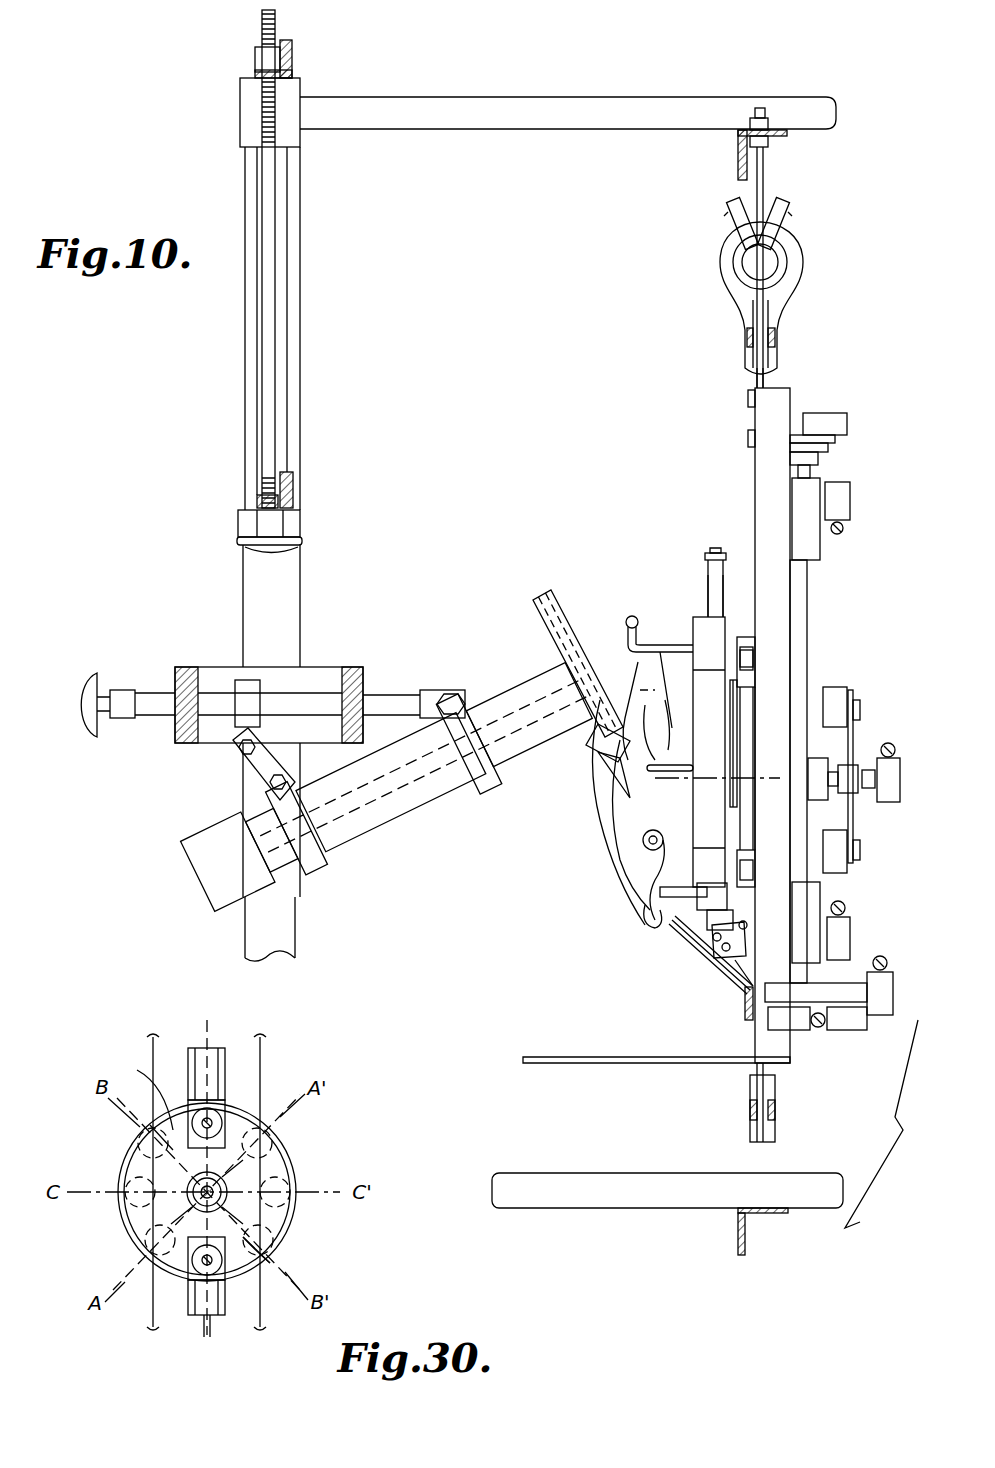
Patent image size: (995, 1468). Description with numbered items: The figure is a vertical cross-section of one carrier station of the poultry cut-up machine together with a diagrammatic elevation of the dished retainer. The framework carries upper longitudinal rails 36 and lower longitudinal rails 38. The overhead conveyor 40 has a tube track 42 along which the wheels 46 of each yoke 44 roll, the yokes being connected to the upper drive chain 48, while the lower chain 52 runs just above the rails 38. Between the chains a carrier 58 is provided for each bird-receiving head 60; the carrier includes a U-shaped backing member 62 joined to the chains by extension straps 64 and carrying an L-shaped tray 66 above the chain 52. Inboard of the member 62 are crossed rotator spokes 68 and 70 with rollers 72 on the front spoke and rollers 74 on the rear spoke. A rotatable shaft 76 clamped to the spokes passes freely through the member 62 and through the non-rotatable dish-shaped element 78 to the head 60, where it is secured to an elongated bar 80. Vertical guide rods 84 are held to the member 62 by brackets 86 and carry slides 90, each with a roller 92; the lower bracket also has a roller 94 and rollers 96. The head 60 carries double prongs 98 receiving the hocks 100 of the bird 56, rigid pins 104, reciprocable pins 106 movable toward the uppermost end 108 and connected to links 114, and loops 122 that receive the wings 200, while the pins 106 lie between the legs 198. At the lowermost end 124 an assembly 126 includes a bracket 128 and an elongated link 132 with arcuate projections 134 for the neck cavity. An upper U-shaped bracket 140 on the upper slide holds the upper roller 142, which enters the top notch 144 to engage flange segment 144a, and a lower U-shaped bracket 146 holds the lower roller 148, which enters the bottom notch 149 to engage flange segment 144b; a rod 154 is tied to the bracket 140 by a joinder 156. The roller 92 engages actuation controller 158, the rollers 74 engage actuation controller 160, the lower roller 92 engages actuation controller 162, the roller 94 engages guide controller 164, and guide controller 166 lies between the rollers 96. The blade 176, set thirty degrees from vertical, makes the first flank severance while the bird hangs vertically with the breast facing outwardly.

In FIG. 10, the upper longitudinal rails 36 is at (740, 142).
In FIG. 10, the lower longitudinal rails 38 is at (738, 1237).
In FIG. 10, the overhead conveyor 40 is at (777, 277).
In FIG. 10, the tube track 42 is at (742, 272).
In FIG. 10, the yoke 44 is at (793, 292).
In FIG. 10, the wheels 46 is at (732, 206).
In FIG. 10, the upper drive chain 48 is at (746, 338).
In FIG. 10, the lower chain 52 is at (776, 1112).
In FIG. 10, the bird 56 is at (585, 822).
In FIG. 10, the carrier 58 is at (750, 472).
In FIG. 30, the carrier 58 is at (266, 1040).
In FIG. 10, the bird-receiving head 60 is at (692, 626).
In FIG. 10, the backing member 62 is at (760, 414).
In FIG. 30, the backing member 62 is at (155, 1330).
In FIG. 10, the extension straps 64 is at (772, 380).
In FIG. 10, the tray 66 is at (615, 1064).
In FIG. 10, the front rotator spoke 68 is at (855, 712).
In FIG. 10, the rear rotator spoke 70 is at (866, 800).
In FIG. 10, the rollers 72 is at (845, 690).
In FIG. 10, the rollers 74 is at (900, 792).
In FIG. 10, the rotatable shaft 76 is at (828, 766).
In FIG. 30, the rotatable shaft 76 is at (220, 1186).
In FIG. 10, the dish-shaped retainer element 78 is at (752, 747).
In FIG. 30, the dish-shaped retainer element 78 is at (292, 1147).
In FIG. 10, the elongated bar 80 is at (738, 802).
In FIG. 10, the vertical guide rods 84 is at (808, 581).
In FIG. 10, the brackets 86 is at (826, 446).
In FIG. 10, the double-sleeved slides 90 is at (822, 546).
In FIG. 10, the roller 92 is at (848, 492).
In FIG. 10, the roller 94 is at (893, 1002).
In FIG. 10, the rollers 96 is at (805, 1036).
In FIG. 10, the double prongs 98 is at (622, 627).
In FIG. 10, the hocks 100 is at (646, 634).
In FIG. 10, the rigid pins 104 is at (668, 765).
In FIG. 10, the reciprocable pins 106 is at (672, 700).
In FIG. 10, the uppermost end of head 108 is at (693, 630).
In FIG. 10, the links 114 is at (752, 702).
In FIG. 10, the loops 122 is at (643, 842).
In FIG. 10, the lowermost end of head 124 is at (690, 936).
In FIG. 10, the assembly 126 is at (700, 972).
In FIG. 10, the bracket 128 is at (735, 916).
In FIG. 10, the elongated link 132 is at (745, 986).
In FIG. 10, the arcuate projections 134 is at (640, 922).
In FIG. 10, the upper U-shaped bracket 140 is at (755, 642).
In FIG. 30, the upper U-shaped bracket 140 is at (197, 1050).
In FIG. 10, the upper roller 142 is at (755, 662).
In FIG. 30, the upper roller 142 is at (230, 1112).
In FIG. 30, the top notch 144 is at (165, 1112).
In FIG. 30, the flange segment 144a is at (298, 1172).
In FIG. 30, the flange segment 144b is at (122, 1167).
In FIG. 30, the lower U-shaped bracket 146 is at (212, 1322).
In FIG. 10, the lower roller 148 is at (755, 868).
In FIG. 30, the lower roller 148 is at (118, 1238).
In FIG. 30, the bottom notch 149 is at (250, 1272).
In FIG. 10, the reciprocable rod 154 is at (708, 572).
In FIG. 10, the joinder 156 is at (710, 553).
In FIG. 10, the actuation controller 158 is at (845, 528).
In FIG. 10, the actuation controller 160 is at (891, 744).
In FIG. 10, the actuation controller 162 is at (846, 907).
In FIG. 10, the guide controller 164 is at (887, 961).
In FIG. 10, the guide controller 166 is at (826, 1028).
In FIG. 10, the blade 176 is at (612, 768).
In FIG. 10, the legs 198 is at (640, 660).
In FIG. 10, the wings 200 is at (640, 906).